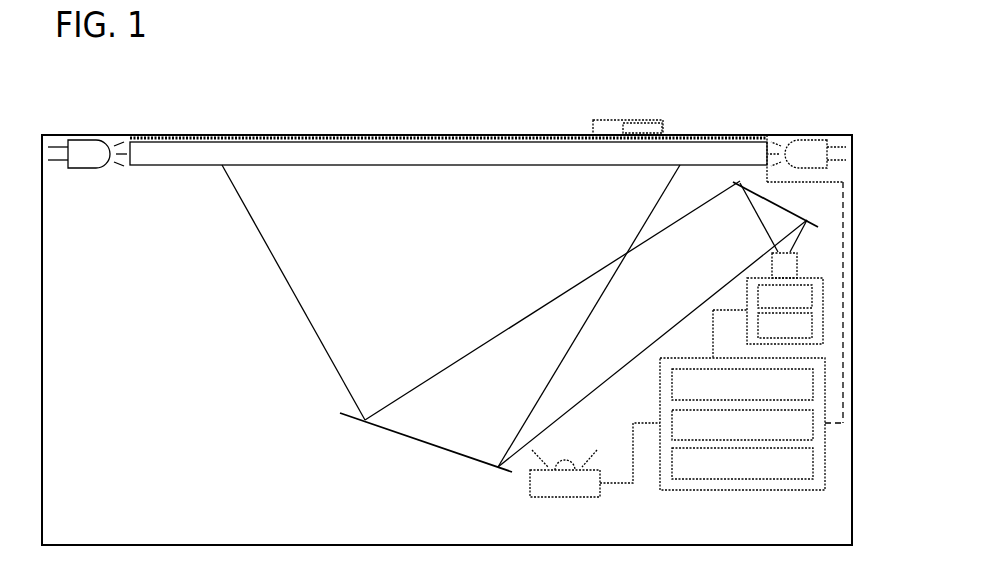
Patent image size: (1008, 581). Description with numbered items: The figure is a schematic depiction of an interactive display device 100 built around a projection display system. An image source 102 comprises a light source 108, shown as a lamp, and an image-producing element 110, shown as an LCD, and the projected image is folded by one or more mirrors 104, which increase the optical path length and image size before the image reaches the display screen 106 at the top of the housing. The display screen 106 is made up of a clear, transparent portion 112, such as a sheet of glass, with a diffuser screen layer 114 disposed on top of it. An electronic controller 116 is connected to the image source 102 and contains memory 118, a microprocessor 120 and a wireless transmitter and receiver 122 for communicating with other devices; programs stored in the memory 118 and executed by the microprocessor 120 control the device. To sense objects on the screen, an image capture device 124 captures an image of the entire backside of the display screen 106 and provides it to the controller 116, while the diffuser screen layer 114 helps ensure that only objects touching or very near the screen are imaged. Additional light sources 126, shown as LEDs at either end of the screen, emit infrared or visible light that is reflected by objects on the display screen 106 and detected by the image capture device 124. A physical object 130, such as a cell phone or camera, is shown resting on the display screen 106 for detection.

The interactive display device 100 is at (440, 63).
The image source 102 is at (825, 308).
The mirrors 104 is at (789, 208).
The display screen 106 is at (247, 132).
The light source 108 is at (815, 325).
The image-producing element 110 is at (815, 294).
The clear, transparent portion 112 is at (287, 158).
The diffuser screen layer 114 is at (325, 132).
The electronic controller 116 is at (683, 492).
The memory 118 is at (814, 383).
The microprocessor 120 is at (816, 428).
The wireless transmitter and receiver 122 is at (743, 481).
The image capture device 124 is at (566, 483).
The light source 126 is at (86, 131).
The physical object 130 is at (613, 127).